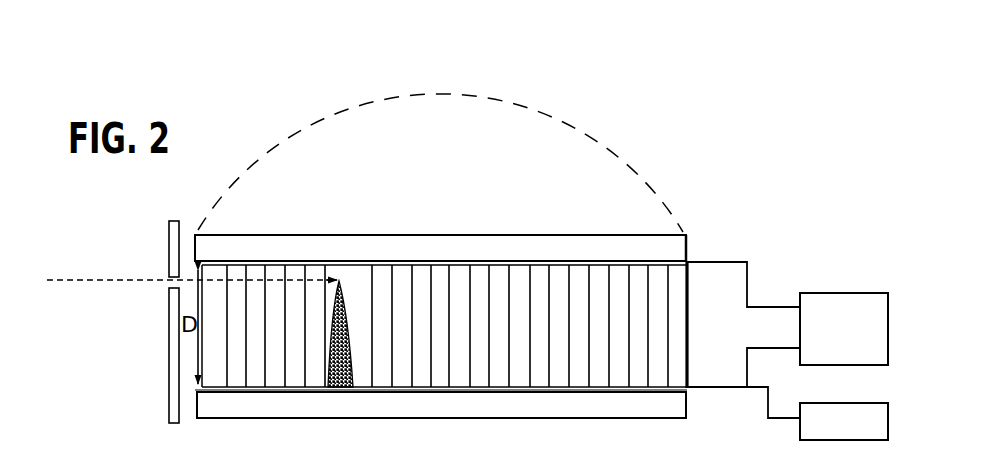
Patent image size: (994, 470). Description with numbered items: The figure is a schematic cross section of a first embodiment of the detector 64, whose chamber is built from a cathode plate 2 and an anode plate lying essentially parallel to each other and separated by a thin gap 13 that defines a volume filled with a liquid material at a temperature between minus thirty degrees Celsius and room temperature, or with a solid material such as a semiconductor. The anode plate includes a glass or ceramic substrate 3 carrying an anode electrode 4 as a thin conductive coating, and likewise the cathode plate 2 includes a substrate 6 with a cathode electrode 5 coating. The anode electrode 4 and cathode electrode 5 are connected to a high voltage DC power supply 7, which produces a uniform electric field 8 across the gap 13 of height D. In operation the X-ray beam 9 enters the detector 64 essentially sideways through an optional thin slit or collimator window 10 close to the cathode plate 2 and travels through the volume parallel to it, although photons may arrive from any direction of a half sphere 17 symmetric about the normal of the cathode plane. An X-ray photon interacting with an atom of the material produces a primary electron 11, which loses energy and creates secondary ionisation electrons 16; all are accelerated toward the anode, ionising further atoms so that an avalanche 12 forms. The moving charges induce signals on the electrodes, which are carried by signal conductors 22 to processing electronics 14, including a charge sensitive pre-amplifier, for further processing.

The cathode plate 2 is at (391, 228).
The substrate 3 is at (681, 407).
The anode electrode 4 is at (690, 381).
The cathode electrode 5 is at (689, 266).
The substrate 6 is at (681, 246).
The high voltage DC power supply 7 is at (844, 329).
The uniform electric field 8 is at (633, 352).
The X-ray beam 9 is at (106, 276).
The collimator window 10 is at (164, 257).
The primary electron 11 is at (351, 281).
The avalanche 12 is at (352, 334).
The gap 13 is at (441, 325).
The processing electronics 14 is at (844, 421).
The secondary ionisation electrons 16 is at (334, 284).
The half sphere 17 is at (509, 97).
The signal conductors 22 is at (774, 402).
The detector 64 is at (588, 181).